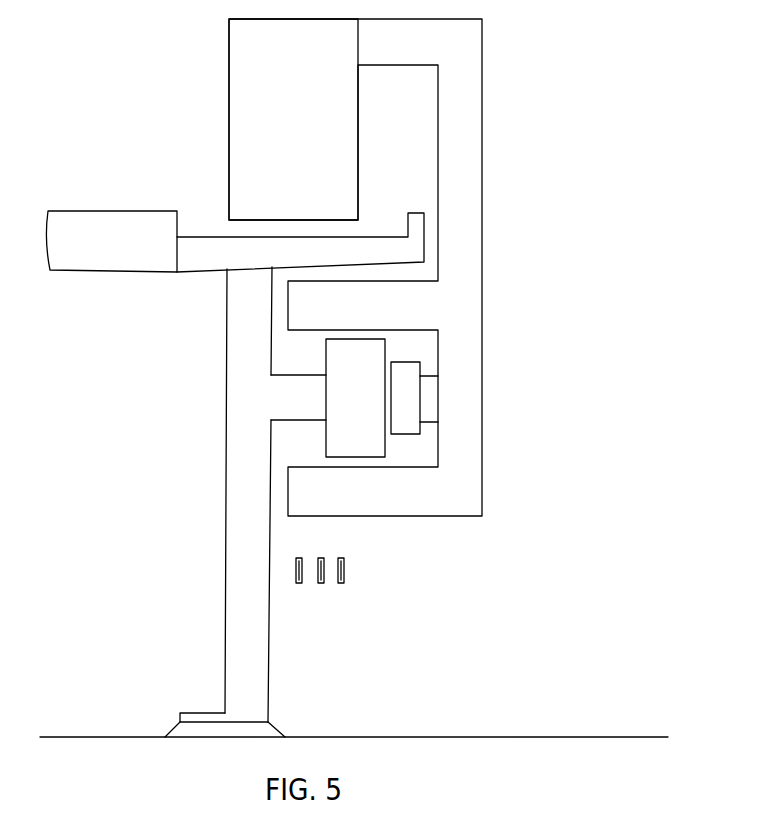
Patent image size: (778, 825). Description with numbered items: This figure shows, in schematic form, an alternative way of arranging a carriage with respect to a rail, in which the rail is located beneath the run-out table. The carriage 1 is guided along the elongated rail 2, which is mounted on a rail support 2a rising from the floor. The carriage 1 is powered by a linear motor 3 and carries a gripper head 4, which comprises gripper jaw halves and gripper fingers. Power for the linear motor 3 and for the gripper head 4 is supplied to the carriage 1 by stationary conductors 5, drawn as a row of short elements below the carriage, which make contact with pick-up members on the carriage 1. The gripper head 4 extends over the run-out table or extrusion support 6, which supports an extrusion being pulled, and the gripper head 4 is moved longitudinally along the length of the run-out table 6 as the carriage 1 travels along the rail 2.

The carriage 1 is at (482, 280).
The rail 2 is at (328, 398).
The rail support 2a is at (232, 566).
The linear motor 3 is at (414, 398).
The gripper head 4 is at (293, 119).
The stationary conductors 5 is at (341, 584).
The run-out table 6 is at (235, 241).